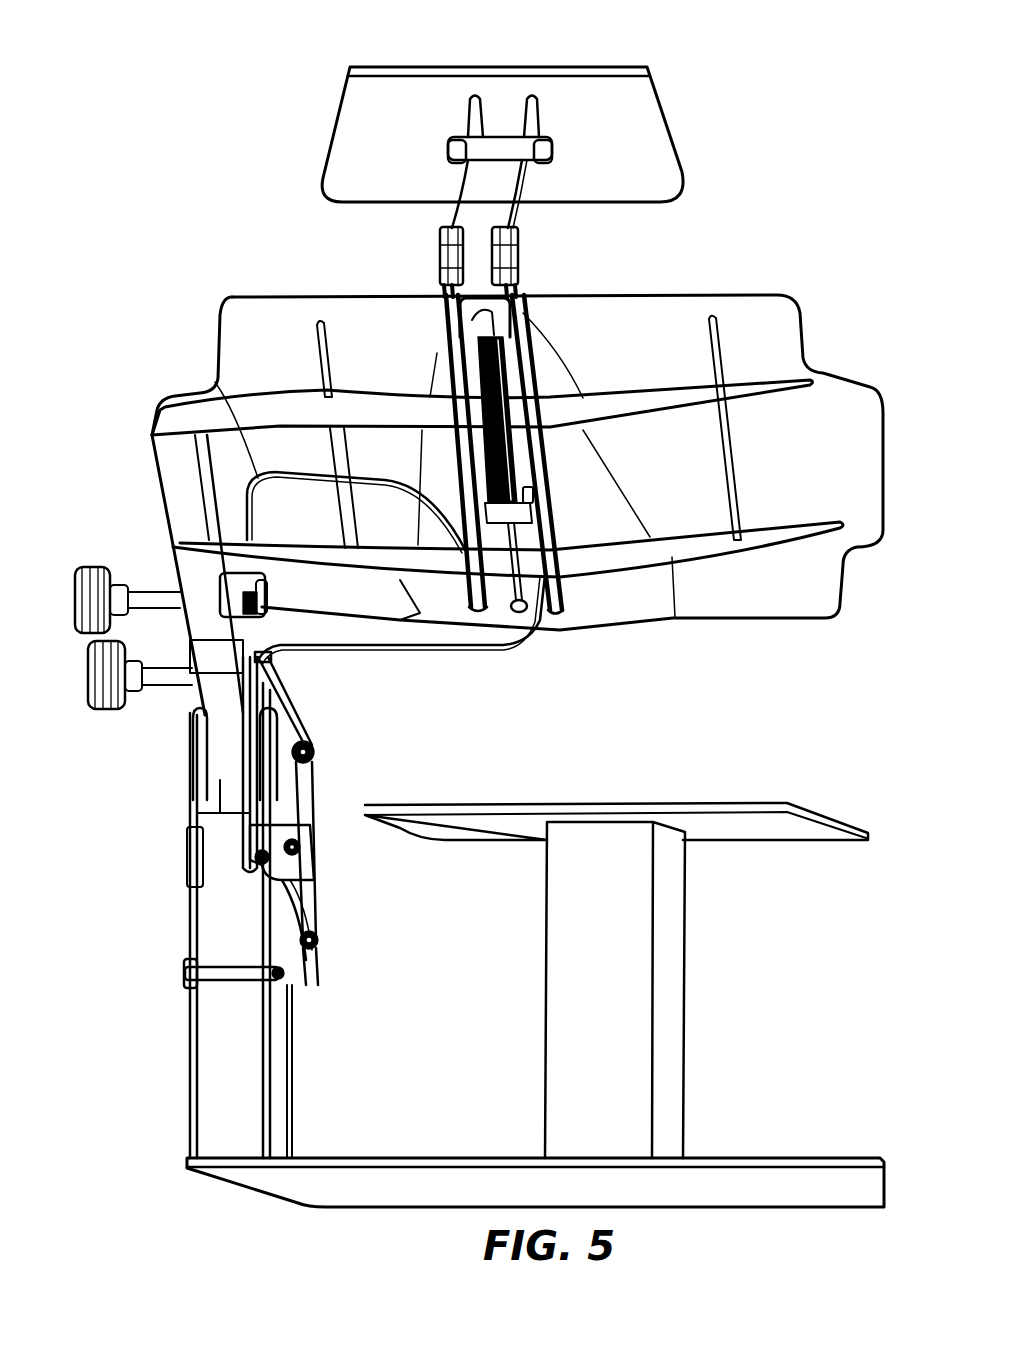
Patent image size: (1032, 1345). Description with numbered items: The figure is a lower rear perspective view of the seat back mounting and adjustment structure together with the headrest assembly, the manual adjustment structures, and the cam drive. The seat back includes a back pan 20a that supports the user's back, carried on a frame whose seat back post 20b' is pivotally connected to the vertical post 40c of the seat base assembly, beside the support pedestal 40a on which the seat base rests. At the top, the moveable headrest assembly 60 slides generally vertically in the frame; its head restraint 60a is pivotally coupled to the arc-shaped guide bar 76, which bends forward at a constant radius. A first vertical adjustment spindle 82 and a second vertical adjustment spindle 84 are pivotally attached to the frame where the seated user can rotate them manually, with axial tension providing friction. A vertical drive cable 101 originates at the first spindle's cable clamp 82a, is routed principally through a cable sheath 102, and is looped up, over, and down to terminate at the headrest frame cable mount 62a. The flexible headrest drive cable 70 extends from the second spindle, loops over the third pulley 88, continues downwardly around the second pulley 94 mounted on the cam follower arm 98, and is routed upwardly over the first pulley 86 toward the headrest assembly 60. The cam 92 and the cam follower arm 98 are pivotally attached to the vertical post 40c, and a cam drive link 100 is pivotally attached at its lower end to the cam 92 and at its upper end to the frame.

The moveable headrest assembly 60 is at (475, 118).
The head restraint 60a is at (583, 95).
The arc-shaped guide bar 76 is at (497, 205).
The back pan 20a is at (487, 505).
The cable sheath 102 is at (265, 470).
The seat back post 20b' is at (467, 575).
The first vertical adjustment spindle cable clamp 82a is at (215, 595).
The first vertical adjustment spindle 82 is at (143, 600).
The second vertical adjustment spindle 84 is at (105, 705).
The cam drive link 100 is at (240, 730).
The third pulley 88 is at (305, 740).
The first pulley 86 is at (310, 762).
The vertical drive cable 101 is at (467, 587).
The headrest frame cable mount 62a is at (467, 577).
The flexible headrest drive cable 70 is at (510, 647).
The cam 92 is at (277, 887).
The second pulley 94 is at (313, 953).
The cam follower arm 98 is at (257, 980).
The support pedestal 40a is at (682, 980).
The vertical post 40c is at (195, 1130).